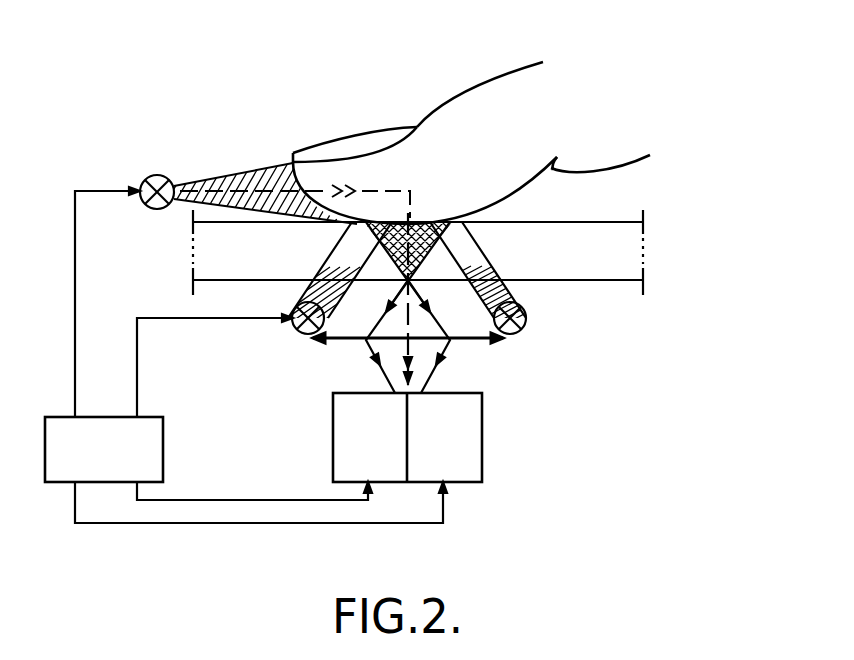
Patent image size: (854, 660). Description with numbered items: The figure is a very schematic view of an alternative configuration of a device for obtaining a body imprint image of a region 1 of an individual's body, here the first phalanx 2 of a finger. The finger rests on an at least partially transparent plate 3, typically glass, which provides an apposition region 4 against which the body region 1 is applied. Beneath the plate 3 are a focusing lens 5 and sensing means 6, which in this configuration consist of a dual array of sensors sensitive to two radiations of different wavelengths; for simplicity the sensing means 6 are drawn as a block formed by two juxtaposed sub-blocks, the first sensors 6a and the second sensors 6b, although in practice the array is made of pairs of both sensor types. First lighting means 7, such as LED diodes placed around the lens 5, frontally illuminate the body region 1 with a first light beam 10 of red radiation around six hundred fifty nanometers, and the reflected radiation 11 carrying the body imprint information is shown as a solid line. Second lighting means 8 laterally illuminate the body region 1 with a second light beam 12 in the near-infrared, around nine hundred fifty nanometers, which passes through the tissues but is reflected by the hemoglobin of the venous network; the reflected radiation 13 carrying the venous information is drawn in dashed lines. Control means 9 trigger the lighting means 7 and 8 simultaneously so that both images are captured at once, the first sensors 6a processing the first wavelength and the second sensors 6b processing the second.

The region of an individual's body 1 is at (480, 150).
The first phalanx 2 is at (373, 190).
The plate 3 is at (566, 242).
The apposition region 4 is at (478, 218).
The focusing lens 5 is at (455, 342).
The sensing means 6 is at (450, 413).
The first sensors 6a is at (367, 433).
The second sensors 6b is at (450, 450).
The first lighting means 7 is at (297, 323).
The second lighting means 8 is at (152, 178).
The control means 9 is at (114, 464).
The first light beam 10 is at (360, 253).
The reflected radiation 11 is at (427, 375).
The second light beam 12 is at (257, 180).
The reflected radiation 13 is at (407, 318).